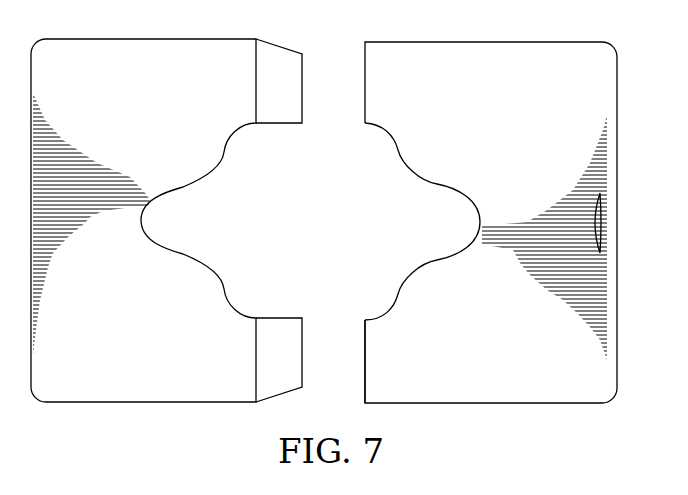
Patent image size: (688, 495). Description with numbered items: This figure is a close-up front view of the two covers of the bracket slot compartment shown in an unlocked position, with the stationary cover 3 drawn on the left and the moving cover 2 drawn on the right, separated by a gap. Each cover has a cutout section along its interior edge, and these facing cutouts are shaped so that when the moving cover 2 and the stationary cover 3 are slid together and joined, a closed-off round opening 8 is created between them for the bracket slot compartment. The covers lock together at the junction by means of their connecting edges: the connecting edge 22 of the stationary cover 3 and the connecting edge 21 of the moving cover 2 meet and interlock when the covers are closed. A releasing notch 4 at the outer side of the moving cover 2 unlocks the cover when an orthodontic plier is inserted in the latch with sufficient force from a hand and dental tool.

The moving cover 2 is at (489, 340).
The stationary cover 3 is at (143, 133).
The releasing notch 4 is at (601, 213).
The opening for the bracket slot compartment 8 is at (408, 167).
The connecting edge of the moving cover 21 is at (365, 321).
The connecting edge of the stationary cover 22 is at (303, 120).